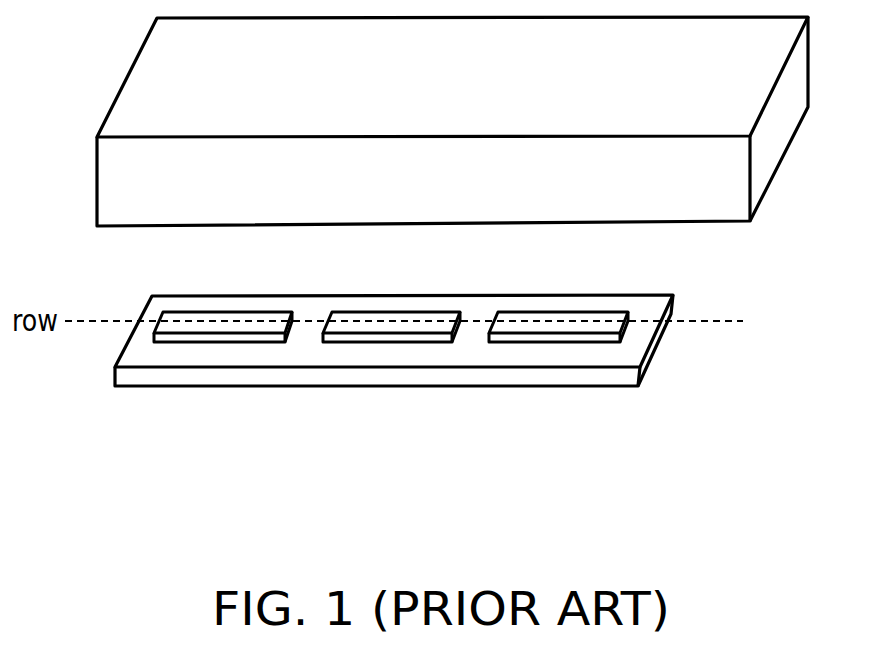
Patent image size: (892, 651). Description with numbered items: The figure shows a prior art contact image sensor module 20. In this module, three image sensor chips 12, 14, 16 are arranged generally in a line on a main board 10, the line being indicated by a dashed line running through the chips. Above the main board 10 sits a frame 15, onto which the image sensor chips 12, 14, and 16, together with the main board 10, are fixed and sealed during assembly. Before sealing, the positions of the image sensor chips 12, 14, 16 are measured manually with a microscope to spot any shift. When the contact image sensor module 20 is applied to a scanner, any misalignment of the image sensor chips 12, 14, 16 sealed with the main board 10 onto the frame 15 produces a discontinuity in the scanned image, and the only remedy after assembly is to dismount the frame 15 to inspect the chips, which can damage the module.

The main board 10 is at (662, 343).
The image sensor chip 12 is at (218, 343).
The image sensor chip 14 is at (386, 343).
The image sensor chip 16 is at (551, 343).
The frame 15 is at (785, 155).
The contact image sensor module 20 is at (772, 451).